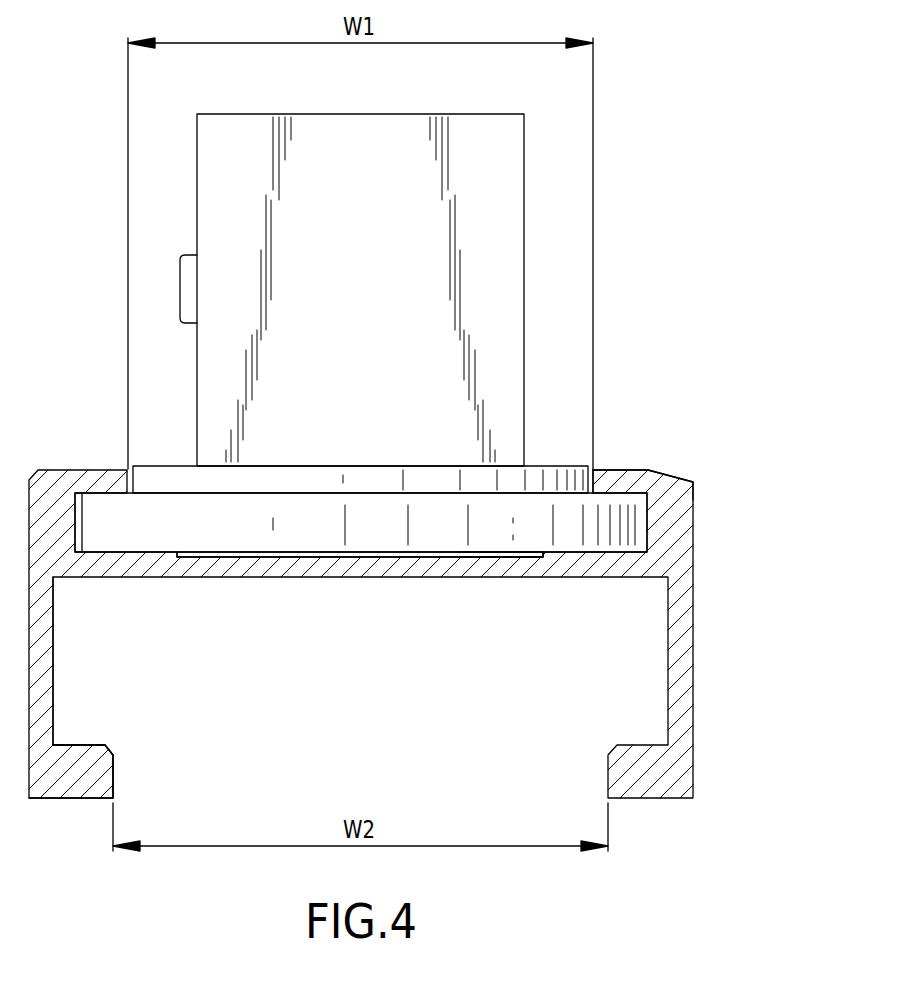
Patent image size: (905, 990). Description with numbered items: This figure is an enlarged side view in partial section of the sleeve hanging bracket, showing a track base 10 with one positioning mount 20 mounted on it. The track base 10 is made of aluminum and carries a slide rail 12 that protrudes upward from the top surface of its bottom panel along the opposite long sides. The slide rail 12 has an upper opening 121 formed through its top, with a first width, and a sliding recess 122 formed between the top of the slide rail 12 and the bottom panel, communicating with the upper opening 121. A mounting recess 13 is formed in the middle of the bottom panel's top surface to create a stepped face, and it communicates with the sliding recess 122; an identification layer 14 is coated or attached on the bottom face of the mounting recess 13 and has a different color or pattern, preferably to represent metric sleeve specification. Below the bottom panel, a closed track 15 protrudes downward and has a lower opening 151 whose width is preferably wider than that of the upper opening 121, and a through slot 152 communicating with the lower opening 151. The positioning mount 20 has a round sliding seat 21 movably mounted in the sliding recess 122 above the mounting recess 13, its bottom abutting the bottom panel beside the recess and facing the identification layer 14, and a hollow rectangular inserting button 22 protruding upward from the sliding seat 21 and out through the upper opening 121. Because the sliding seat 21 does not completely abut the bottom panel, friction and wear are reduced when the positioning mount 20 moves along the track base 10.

The track base 10 is at (722, 637).
The slide rail 12 is at (649, 466).
The mounting recess 13 is at (542, 556).
The identification layer 14 is at (371, 557).
The closed track 15 is at (72, 808).
The lower opening 151 is at (115, 778).
The through slot 152 is at (53, 652).
The positioning mount 20 is at (537, 328).
The sliding seat 21 is at (238, 533).
The inserting button 22 is at (348, 128).
The upper opening 121 is at (130, 477).
The sliding recess 122 is at (78, 527).